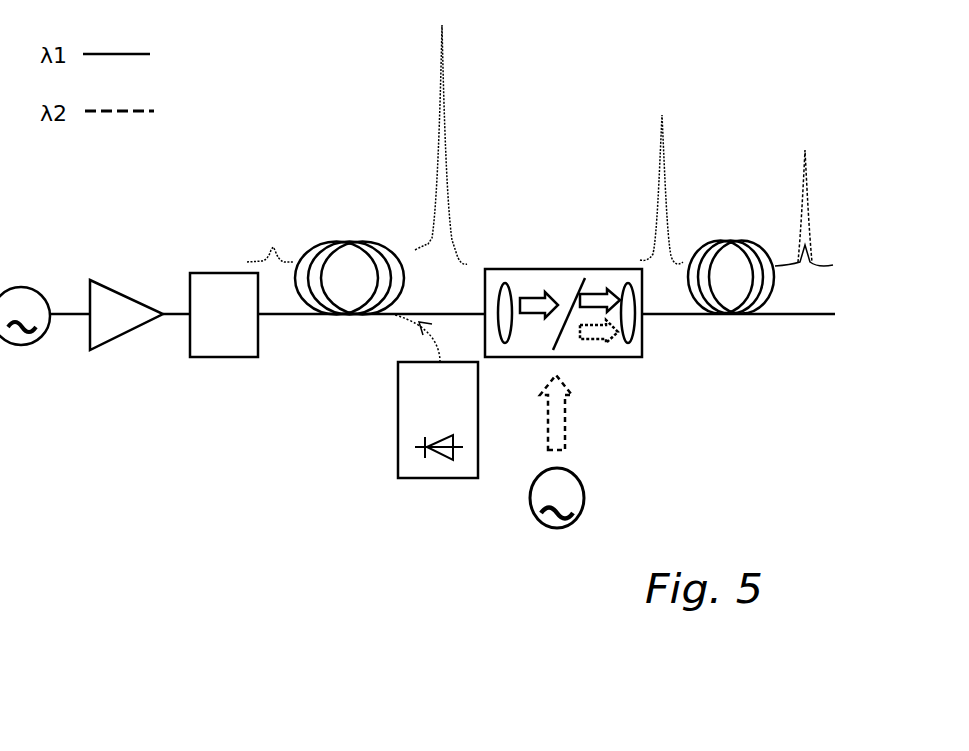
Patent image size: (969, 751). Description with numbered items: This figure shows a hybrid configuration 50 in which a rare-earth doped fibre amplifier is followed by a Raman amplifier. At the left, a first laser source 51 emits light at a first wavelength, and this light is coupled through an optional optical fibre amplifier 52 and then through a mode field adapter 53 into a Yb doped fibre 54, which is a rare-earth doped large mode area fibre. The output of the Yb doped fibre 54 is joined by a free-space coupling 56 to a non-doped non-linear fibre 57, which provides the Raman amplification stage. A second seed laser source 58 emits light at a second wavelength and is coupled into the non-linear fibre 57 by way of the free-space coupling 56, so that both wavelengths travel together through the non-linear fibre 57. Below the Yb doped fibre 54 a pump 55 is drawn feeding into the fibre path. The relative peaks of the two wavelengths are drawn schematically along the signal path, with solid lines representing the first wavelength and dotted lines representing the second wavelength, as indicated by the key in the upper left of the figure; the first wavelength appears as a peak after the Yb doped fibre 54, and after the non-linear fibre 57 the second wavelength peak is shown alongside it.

The hybrid configuration 50 is at (108, 504).
The first laser source 51 is at (25, 316).
The optical fibre amplifier 52 is at (126, 315).
The mode field adapter 53 is at (224, 315).
The Yb doped fibre 54 is at (307, 251).
The pump 55 is at (436, 396).
The free-space coupling 56 is at (567, 269).
The non-doped non-linear fibre 57 is at (720, 287).
The second seed laser source 58 is at (557, 451).